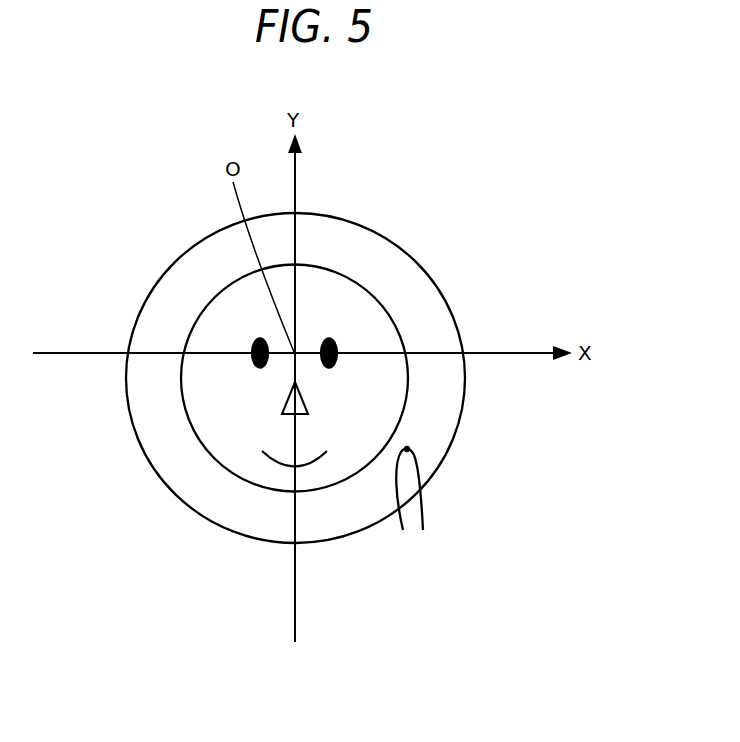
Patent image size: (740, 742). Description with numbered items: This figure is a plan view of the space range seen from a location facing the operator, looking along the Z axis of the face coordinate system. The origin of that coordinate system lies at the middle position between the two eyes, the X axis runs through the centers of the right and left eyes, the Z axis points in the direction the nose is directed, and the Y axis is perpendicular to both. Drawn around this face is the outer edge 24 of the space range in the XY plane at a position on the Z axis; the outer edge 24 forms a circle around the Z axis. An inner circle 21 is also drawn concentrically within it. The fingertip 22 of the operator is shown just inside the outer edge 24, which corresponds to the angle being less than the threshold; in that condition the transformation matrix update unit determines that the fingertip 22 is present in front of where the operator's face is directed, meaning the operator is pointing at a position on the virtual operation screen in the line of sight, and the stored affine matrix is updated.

The inner circle (display region) 21 is at (373, 293).
The fingertip 22 is at (407, 449).
The outer edge 24 is at (427, 270).